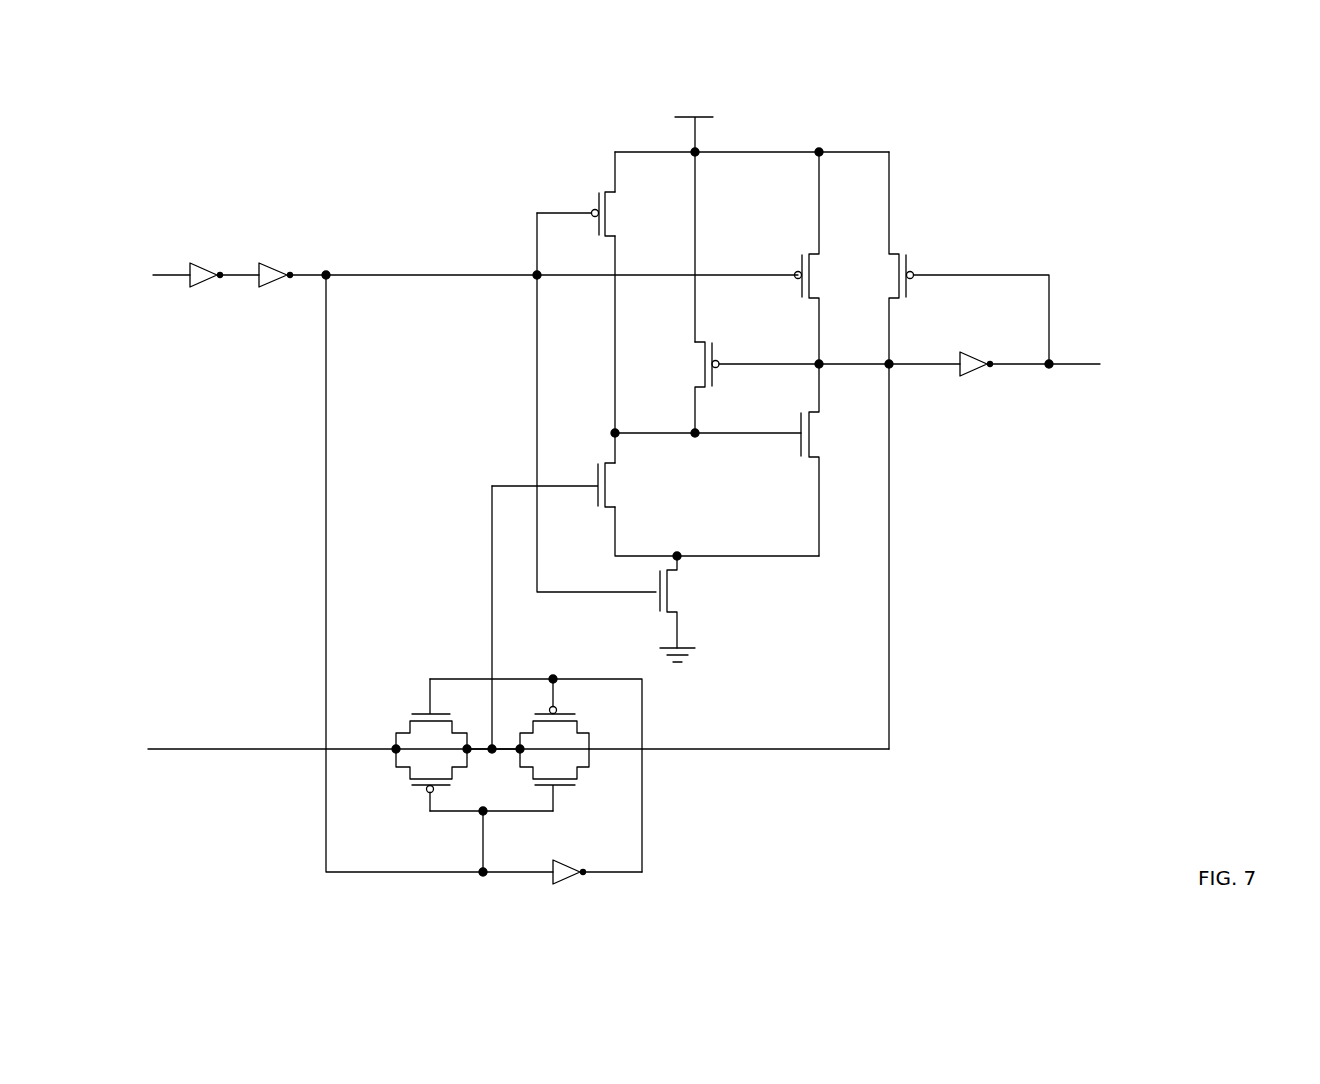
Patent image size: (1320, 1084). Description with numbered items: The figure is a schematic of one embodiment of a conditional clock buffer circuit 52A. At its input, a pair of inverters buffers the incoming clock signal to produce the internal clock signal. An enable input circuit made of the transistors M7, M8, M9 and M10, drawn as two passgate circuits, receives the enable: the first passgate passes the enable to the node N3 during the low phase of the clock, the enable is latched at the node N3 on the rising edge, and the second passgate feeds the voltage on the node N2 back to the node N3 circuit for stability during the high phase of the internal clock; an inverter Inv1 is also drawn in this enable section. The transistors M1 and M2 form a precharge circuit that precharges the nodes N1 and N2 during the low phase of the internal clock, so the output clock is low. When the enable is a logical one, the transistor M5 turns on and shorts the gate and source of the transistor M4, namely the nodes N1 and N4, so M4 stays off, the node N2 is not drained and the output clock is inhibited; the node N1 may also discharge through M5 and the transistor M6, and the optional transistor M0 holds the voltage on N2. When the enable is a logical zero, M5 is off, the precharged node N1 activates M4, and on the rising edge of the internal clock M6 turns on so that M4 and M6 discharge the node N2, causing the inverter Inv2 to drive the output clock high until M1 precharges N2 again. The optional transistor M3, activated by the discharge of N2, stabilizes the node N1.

The conditional clock buffer circuit 52A is at (360, 137).
The transistor M0 is at (953, 450).
The transistor M1 is at (821, 258).
The transistor M2 is at (592, 214).
The transistor M3 is at (812, 387).
The transistor M4 is at (830, 460).
The transistor M5 is at (571, 485).
The transistor M6 is at (684, 609).
The transistor M7 is at (569, 780).
The transistor M8 is at (570, 714).
The transistor M9 is at (411, 714).
The transistor M10 is at (410, 780).
The node N1 is at (706, 419).
The node N2 is at (854, 350).
The node N3 is at (493, 764).
The node N4 is at (691, 542).
The inverter Inv1 is at (597, 860).
The inverter Inv2 is at (1030, 352).